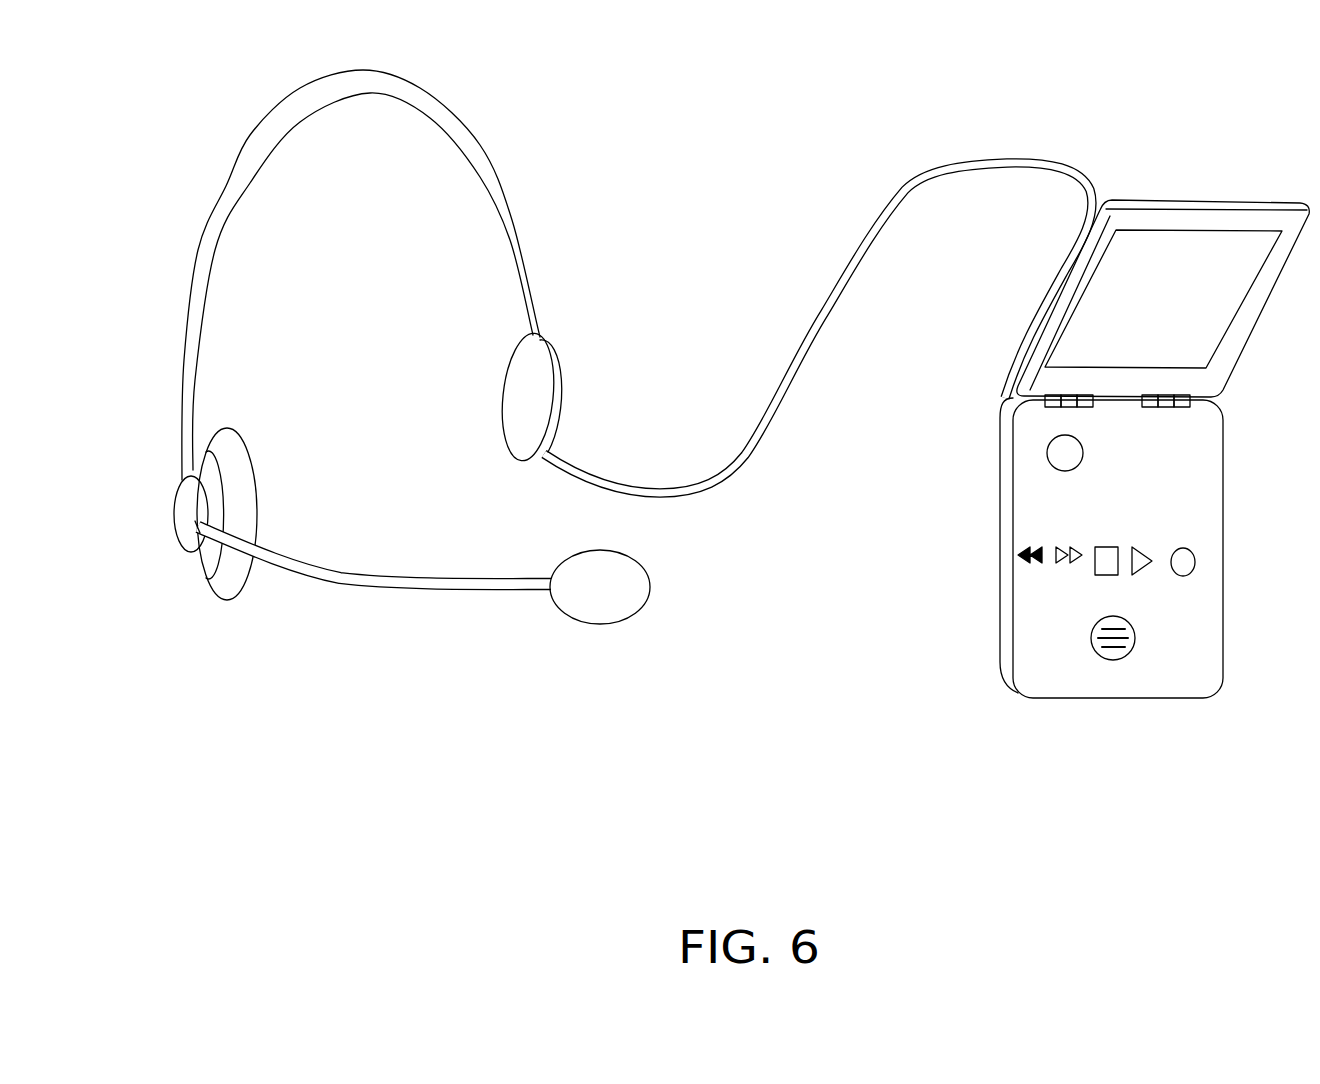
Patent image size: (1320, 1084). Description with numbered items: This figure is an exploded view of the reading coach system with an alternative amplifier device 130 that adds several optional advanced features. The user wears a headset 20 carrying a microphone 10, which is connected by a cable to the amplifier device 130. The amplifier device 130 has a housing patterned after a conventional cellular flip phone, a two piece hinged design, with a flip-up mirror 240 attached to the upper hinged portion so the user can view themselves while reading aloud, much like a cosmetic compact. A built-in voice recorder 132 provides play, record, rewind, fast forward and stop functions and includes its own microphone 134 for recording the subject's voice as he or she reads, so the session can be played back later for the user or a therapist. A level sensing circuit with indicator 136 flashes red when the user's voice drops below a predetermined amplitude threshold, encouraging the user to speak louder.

The headset 20 is at (231, 175).
The microphone 10 is at (650, 590).
The alternative amplifier device 130 is at (963, 388).
The flip-up mirror 240 is at (1215, 248).
The level sensing circuit with indicator 136 is at (1046, 457).
The voice recorder 132 is at (1046, 626).
The microphone 134 is at (1097, 655).